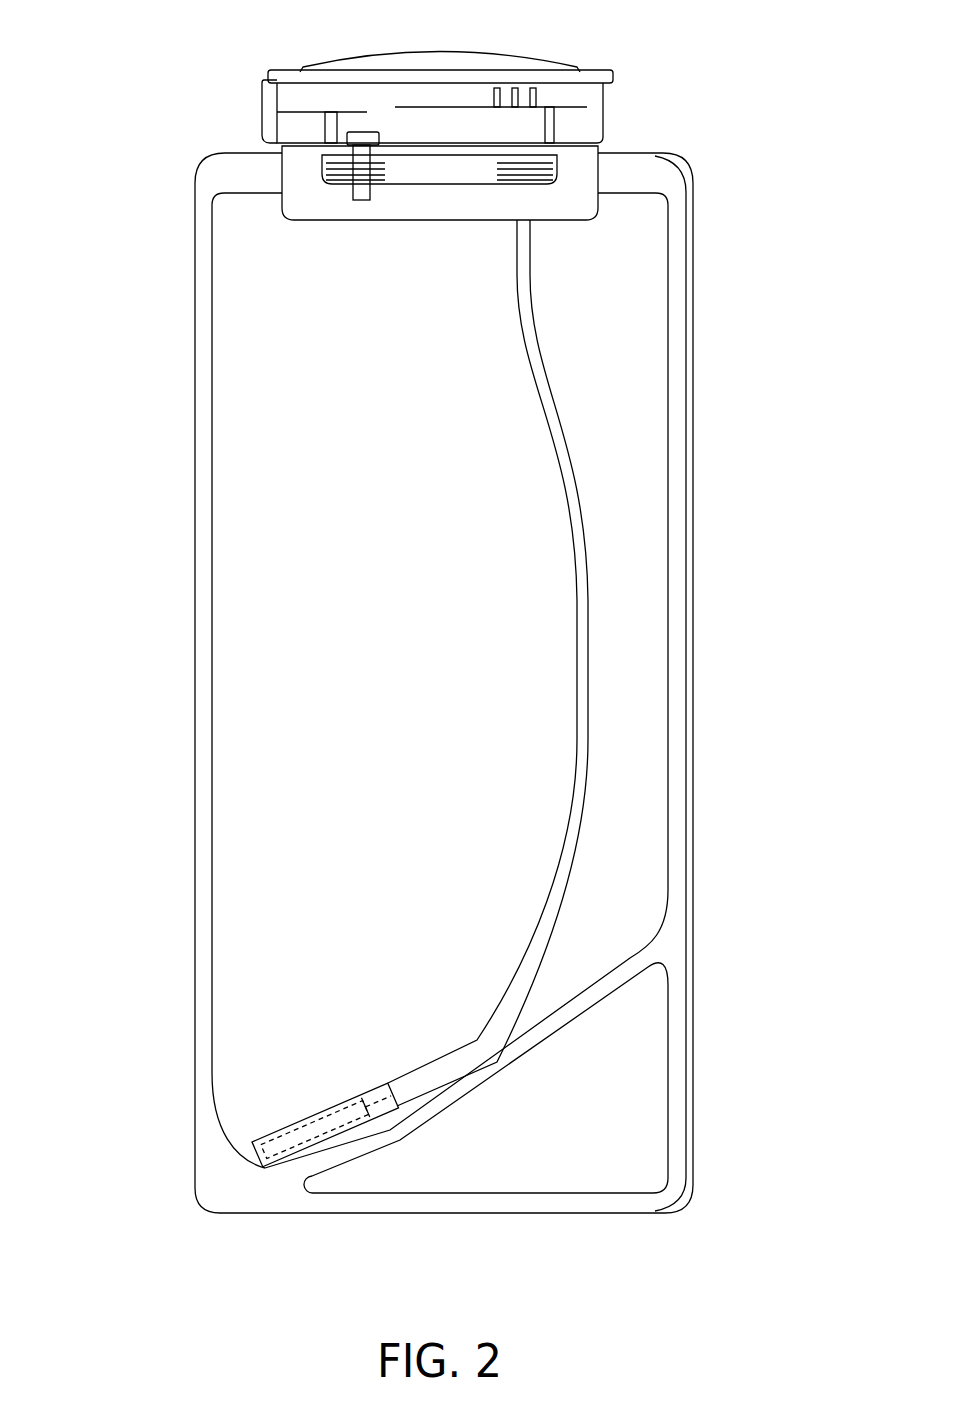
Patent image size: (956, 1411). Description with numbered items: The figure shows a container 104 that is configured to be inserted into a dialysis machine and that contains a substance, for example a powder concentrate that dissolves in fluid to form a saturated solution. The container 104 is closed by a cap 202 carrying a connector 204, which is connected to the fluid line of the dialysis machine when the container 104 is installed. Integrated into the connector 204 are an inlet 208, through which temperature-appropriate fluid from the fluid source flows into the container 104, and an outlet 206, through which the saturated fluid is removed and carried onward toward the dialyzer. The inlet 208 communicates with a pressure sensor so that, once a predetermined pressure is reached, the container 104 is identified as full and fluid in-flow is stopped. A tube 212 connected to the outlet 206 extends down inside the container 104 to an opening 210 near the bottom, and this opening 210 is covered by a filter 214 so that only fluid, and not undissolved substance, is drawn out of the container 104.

The container 104 is at (714, 539).
The cap 202 is at (298, 65).
The connector 204 is at (262, 108).
The outlet 206 is at (523, 147).
The inlet 208 is at (323, 150).
The opening 210 is at (263, 1152).
The tube 212 is at (577, 655).
The filter 214 is at (312, 1123).